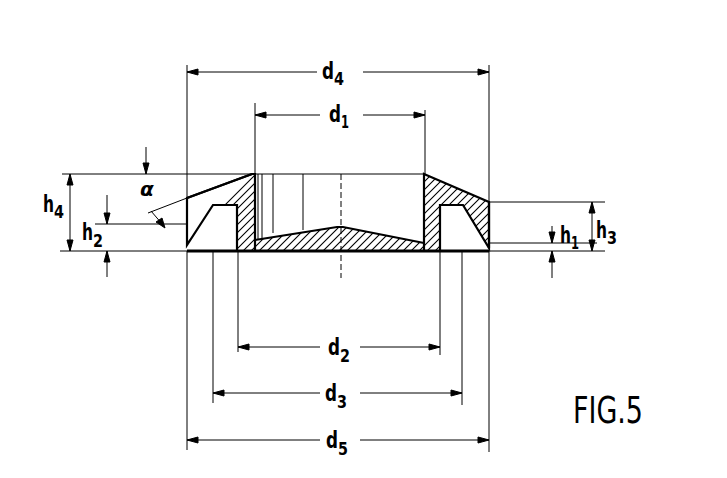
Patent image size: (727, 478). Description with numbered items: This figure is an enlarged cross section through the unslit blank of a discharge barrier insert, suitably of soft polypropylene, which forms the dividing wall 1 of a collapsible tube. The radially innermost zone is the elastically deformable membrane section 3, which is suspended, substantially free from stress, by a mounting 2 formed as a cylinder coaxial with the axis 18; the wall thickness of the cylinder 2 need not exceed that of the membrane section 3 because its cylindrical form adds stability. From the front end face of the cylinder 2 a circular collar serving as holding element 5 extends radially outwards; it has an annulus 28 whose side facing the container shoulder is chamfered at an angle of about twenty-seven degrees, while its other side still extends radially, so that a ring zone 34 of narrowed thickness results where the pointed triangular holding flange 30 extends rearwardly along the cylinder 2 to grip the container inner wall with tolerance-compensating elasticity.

The dividing wall 1 is at (413, 205).
The mounting 2 is at (258, 212).
The membrane section 3 is at (353, 252).
The holding element 5 is at (197, 188).
The axis 18 is at (341, 174).
The annulus 28 is at (219, 186).
The holding flange 30 is at (490, 237).
The ring zone 34 is at (465, 191).